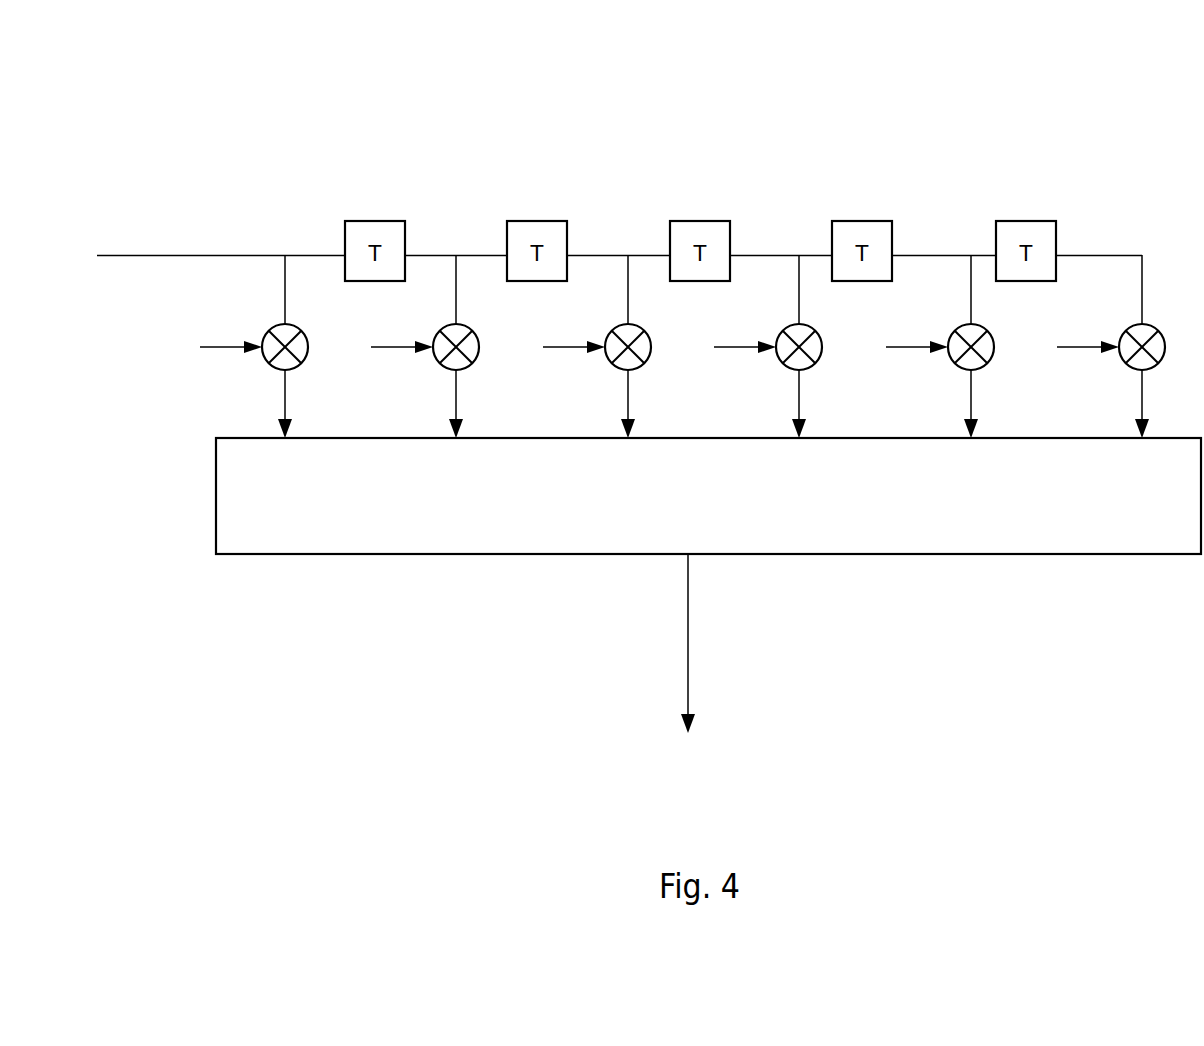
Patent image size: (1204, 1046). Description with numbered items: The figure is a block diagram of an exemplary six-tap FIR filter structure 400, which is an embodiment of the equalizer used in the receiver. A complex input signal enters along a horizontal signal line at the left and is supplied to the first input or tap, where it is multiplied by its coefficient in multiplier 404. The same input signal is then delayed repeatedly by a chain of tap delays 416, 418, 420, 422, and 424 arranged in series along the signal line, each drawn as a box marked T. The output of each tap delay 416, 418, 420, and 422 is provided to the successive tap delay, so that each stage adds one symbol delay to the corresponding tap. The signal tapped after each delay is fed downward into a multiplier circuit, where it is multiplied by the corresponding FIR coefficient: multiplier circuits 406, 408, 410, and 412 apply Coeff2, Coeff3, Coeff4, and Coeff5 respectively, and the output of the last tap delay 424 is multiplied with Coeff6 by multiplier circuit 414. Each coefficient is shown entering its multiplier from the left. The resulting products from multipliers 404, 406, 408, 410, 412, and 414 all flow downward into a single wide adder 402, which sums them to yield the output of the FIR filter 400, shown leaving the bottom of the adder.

The FIR filter 400 is at (218, 118).
The adder 402 is at (270, 557).
The multiplier 404 is at (272, 361).
The multiplier circuit 406 is at (443, 361).
The multiplier circuit 408 is at (615, 361).
The multiplier circuit 410 is at (786, 361).
The multiplier circuit 412 is at (958, 361).
The multiplier circuit 414 is at (1129, 361).
The tap delay 416 is at (382, 220).
The tap delay 418 is at (544, 220).
The tap delay 420 is at (707, 220).
The tap delay 422 is at (869, 220).
The tap delay 424 is at (1023, 222).